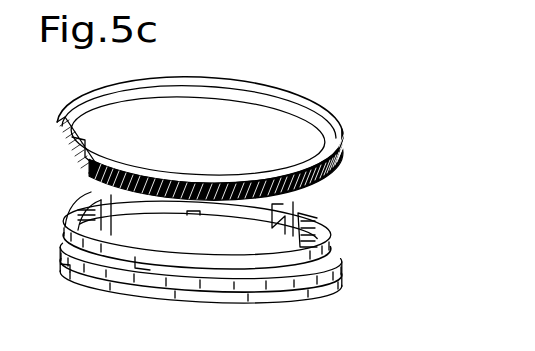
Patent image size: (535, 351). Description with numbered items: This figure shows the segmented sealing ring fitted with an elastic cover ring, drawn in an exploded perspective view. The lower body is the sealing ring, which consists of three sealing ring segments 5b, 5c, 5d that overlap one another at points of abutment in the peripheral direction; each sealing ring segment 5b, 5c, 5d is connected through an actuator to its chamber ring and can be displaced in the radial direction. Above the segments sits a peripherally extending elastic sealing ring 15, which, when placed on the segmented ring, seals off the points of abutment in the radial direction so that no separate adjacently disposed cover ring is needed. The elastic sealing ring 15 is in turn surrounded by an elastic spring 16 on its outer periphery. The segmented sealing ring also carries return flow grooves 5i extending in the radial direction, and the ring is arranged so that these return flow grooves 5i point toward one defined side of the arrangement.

The elastic sealing ring 15 is at (297, 100).
The elastic spring 16 is at (346, 150).
The sealing ring segment 5b is at (115, 193).
The sealing ring segment 5c is at (333, 270).
The sealing ring segment 5d is at (62, 252).
The return flow grooves 5i is at (199, 215).